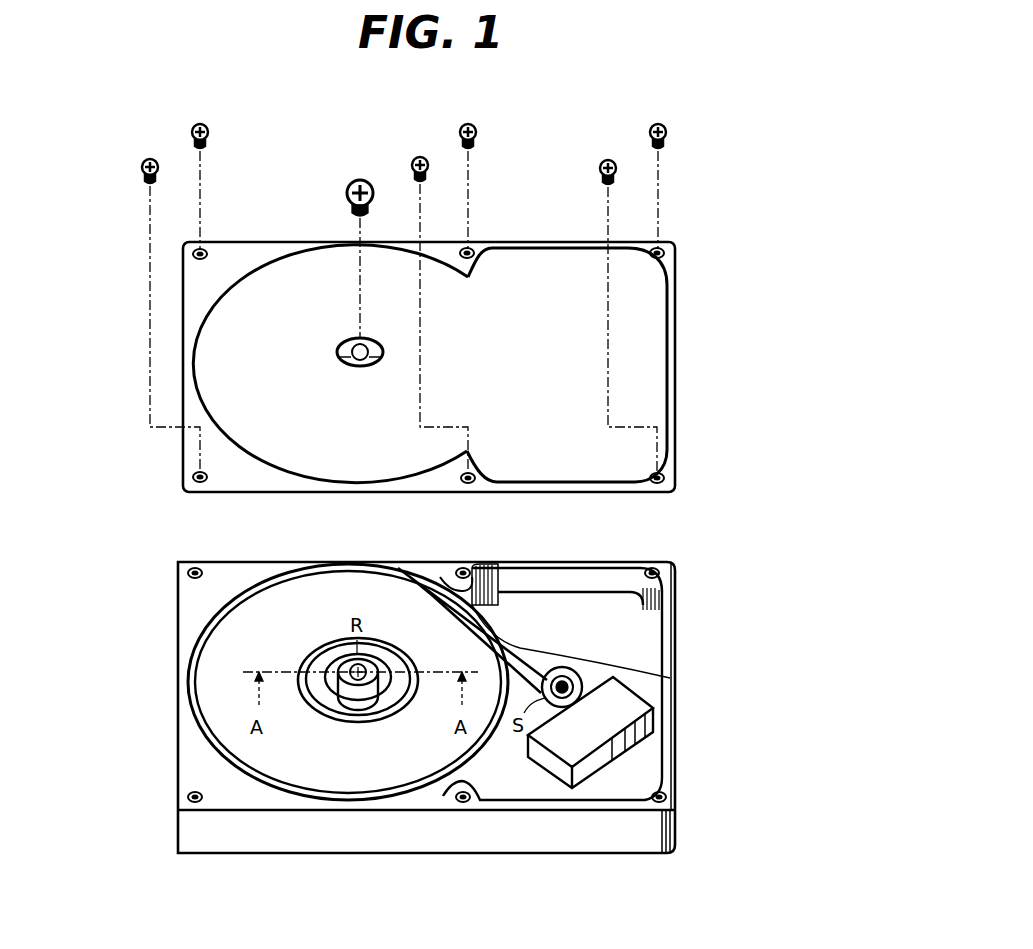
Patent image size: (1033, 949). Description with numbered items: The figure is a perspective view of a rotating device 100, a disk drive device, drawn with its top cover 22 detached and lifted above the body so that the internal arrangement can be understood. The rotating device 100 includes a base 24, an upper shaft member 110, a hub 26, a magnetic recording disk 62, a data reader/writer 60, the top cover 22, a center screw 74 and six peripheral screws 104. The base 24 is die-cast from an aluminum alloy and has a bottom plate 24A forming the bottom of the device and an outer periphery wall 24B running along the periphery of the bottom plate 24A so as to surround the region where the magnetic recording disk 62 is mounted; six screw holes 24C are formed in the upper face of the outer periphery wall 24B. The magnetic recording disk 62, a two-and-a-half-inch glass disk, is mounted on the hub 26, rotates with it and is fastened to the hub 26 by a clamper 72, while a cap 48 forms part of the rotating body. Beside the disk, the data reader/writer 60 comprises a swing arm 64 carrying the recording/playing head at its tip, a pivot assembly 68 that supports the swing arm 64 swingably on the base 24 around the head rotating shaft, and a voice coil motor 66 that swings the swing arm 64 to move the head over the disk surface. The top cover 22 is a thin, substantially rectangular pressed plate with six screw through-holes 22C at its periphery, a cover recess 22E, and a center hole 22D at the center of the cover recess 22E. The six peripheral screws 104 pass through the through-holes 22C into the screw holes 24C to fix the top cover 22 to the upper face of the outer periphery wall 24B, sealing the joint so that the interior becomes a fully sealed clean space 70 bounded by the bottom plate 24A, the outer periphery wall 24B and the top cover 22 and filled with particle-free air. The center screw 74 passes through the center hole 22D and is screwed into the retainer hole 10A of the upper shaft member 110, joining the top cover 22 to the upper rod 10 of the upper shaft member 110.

The rotating device 100 is at (318, 903).
The upper rod 10 is at (376, 697).
The retainer hole 10A is at (357, 666).
The upper shaft member 110 is at (372, 669).
The top cover 22 is at (650, 318).
The screw through-holes 22C is at (207, 250).
The center hole 22D is at (368, 364).
The cover recess 22E is at (350, 362).
The base 24 is at (557, 822).
The bottom plate 24A is at (613, 652).
The outer periphery wall 24B is at (666, 640).
The screw holes 24C is at (187, 572).
The hub 26 is at (316, 692).
The cap 48 is at (327, 678).
The data reader/writer 60 is at (587, 678).
The magnetic recording disk 62 is at (263, 627).
The swing arm 64 is at (580, 667).
The voice coil motor 66 is at (594, 726).
The pivot assembly 68 is at (605, 697).
The clean space 70 is at (544, 616).
The clamper 72 is at (366, 718).
The center screw 74 is at (347, 192).
The peripheral screws 104 is at (142, 164).